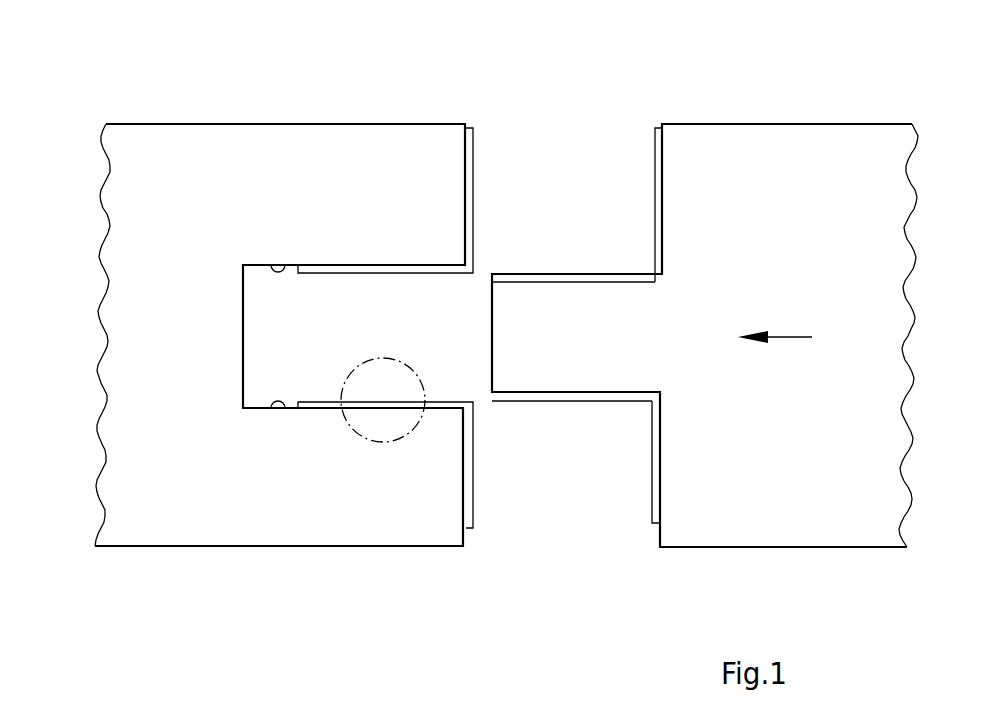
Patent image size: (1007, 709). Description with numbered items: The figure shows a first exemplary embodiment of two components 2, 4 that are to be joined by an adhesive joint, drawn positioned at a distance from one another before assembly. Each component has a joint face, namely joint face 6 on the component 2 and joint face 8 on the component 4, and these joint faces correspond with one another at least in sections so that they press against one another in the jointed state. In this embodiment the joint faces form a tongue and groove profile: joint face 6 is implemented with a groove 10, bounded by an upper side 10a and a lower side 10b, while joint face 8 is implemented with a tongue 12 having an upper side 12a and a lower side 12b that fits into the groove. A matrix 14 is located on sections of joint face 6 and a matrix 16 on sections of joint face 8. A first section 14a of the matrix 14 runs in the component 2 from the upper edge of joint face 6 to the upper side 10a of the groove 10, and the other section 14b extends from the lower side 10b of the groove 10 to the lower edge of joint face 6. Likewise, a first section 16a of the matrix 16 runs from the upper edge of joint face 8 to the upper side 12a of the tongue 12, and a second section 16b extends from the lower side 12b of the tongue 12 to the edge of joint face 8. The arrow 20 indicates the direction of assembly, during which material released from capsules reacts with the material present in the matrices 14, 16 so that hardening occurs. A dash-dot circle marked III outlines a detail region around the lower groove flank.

The component 2 is at (156, 155).
The component 4 is at (818, 153).
The joint face 6 is at (493, 133).
The joint face 8 is at (642, 137).
The groove 10 is at (262, 303).
The upper side of groove 10a is at (287, 262).
The lower side of groove 10b is at (285, 412).
The tongue 12 is at (548, 318).
The upper side of tongue 12a is at (595, 278).
The lower side of tongue 12b is at (603, 397).
The matrix 14 is at (485, 520).
The first section of matrix 14a is at (472, 183).
The other section of matrix 14b is at (467, 498).
The matrix 16 is at (640, 517).
The first section of matrix 16a is at (657, 197).
The second section of matrix 16b is at (653, 498).
The arrow 20 is at (785, 338).
The detail view region III is at (388, 442).